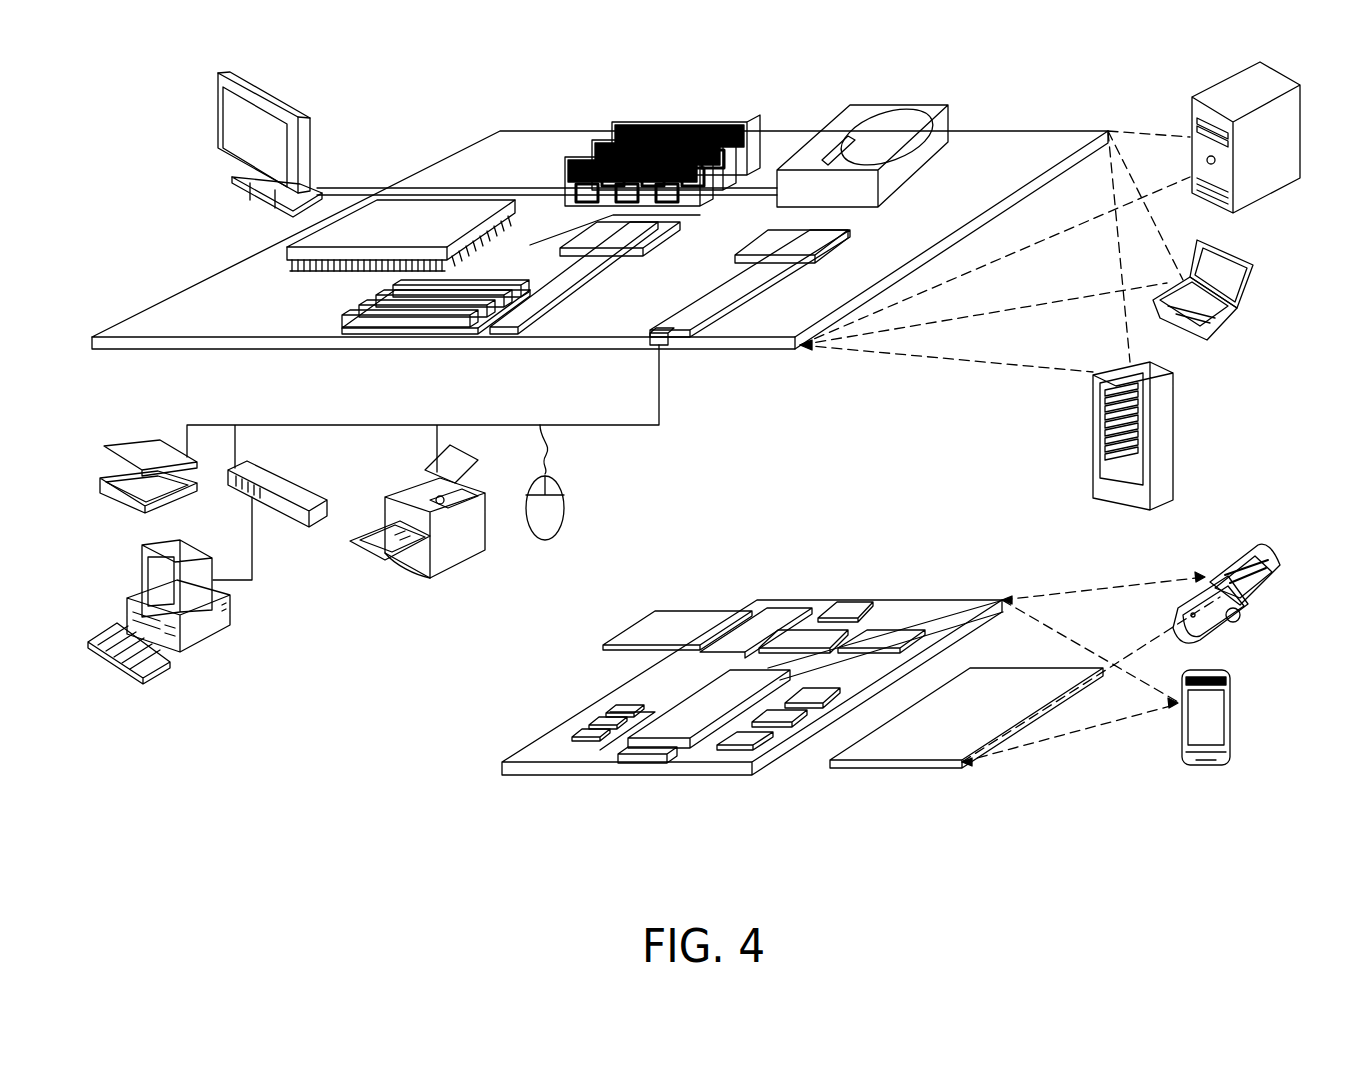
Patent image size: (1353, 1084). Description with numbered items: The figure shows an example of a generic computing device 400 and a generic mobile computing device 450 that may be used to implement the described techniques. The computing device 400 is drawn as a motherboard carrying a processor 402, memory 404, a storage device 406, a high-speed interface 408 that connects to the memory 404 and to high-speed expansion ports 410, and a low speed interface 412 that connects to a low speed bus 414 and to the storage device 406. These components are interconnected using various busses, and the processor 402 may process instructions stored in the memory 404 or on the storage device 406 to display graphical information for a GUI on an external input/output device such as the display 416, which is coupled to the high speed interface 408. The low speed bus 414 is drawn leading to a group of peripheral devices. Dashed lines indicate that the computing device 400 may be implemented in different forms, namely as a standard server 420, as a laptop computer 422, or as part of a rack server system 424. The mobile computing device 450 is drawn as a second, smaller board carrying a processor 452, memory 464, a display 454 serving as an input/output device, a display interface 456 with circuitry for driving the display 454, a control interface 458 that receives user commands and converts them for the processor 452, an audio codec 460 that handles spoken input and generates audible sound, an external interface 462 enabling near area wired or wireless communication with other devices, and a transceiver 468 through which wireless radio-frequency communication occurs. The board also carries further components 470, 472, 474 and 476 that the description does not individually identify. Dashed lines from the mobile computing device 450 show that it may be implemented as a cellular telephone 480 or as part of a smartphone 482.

The computing device 400 is at (413, 94).
The processor 402 is at (290, 251).
The memory 404 is at (618, 95).
The storage device 406 is at (855, 114).
The high-speed interface 408 is at (590, 238).
The high-speed expansion ports 410 is at (367, 307).
The low speed interface 412 is at (777, 233).
The low speed bus 414 is at (666, 336).
The display 416 is at (222, 76).
The standard server 420 is at (1195, 112).
The laptop computer 422 is at (1258, 262).
The rack server system 424 is at (1098, 462).
The mobile computing device 450 is at (472, 772).
The processor 452 is at (682, 730).
The display 454 is at (922, 752).
The display interface 456 is at (755, 738).
The control interface 458 is at (783, 722).
The audio codec 460 is at (810, 696).
The external interface 462 is at (648, 772).
The memory 464 is at (596, 722).
The transceiver 468 is at (883, 638).
The component 470 is at (852, 607).
The connector rail 472 is at (717, 612).
The component 474 is at (643, 611).
The component 476 is at (803, 637).
The cellular telephone 480 is at (1235, 521).
The smartphone 482 is at (1180, 733).